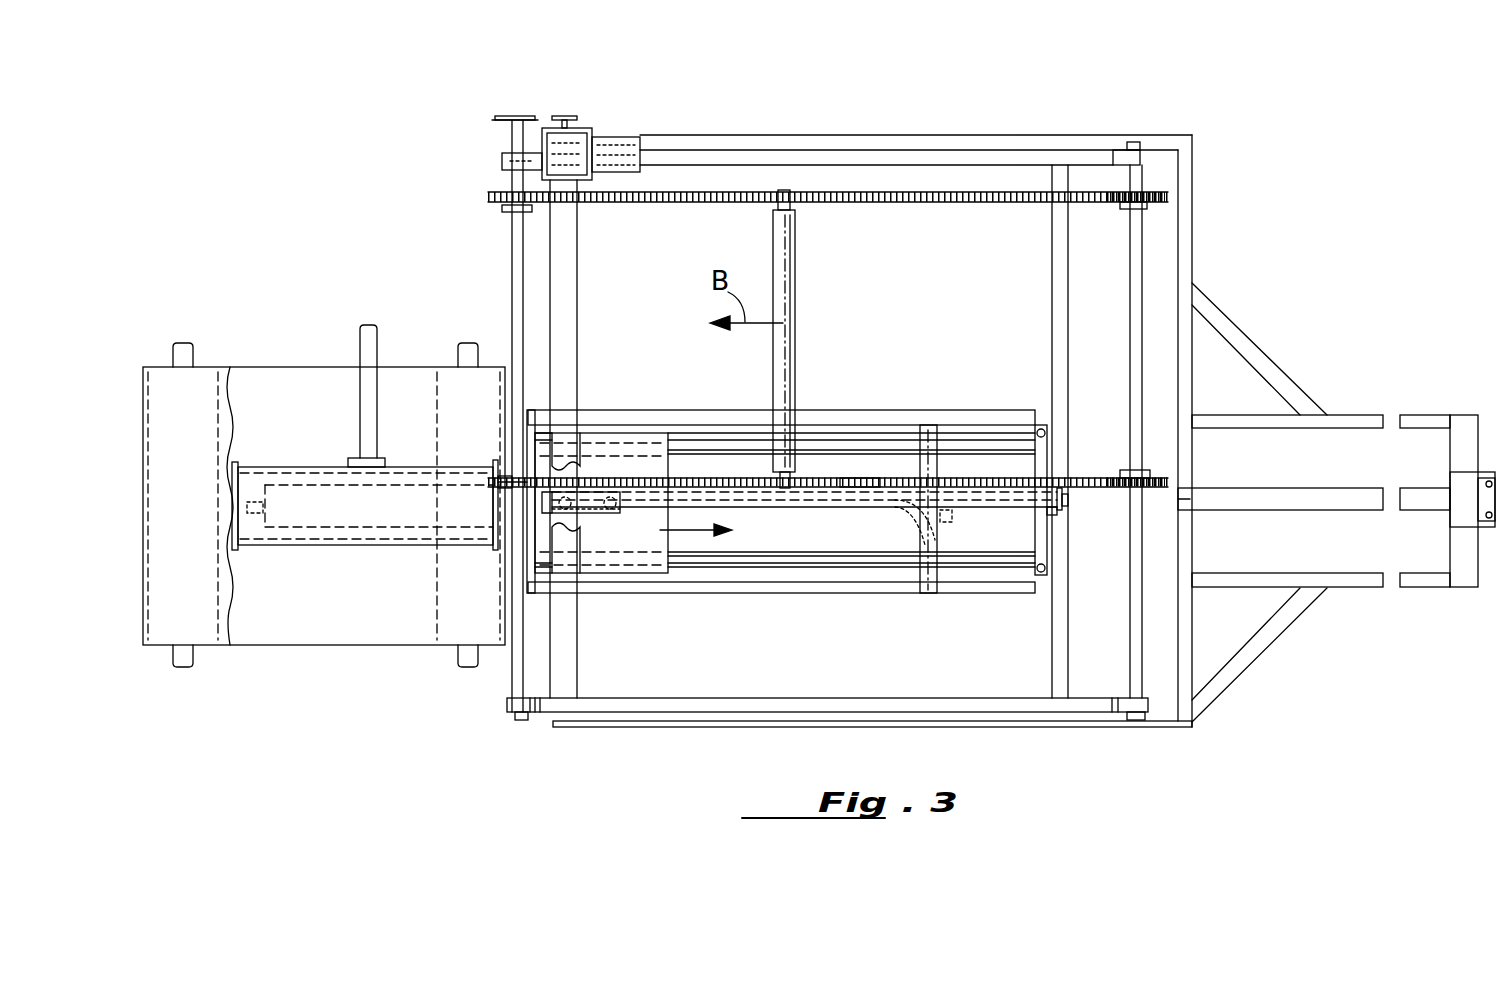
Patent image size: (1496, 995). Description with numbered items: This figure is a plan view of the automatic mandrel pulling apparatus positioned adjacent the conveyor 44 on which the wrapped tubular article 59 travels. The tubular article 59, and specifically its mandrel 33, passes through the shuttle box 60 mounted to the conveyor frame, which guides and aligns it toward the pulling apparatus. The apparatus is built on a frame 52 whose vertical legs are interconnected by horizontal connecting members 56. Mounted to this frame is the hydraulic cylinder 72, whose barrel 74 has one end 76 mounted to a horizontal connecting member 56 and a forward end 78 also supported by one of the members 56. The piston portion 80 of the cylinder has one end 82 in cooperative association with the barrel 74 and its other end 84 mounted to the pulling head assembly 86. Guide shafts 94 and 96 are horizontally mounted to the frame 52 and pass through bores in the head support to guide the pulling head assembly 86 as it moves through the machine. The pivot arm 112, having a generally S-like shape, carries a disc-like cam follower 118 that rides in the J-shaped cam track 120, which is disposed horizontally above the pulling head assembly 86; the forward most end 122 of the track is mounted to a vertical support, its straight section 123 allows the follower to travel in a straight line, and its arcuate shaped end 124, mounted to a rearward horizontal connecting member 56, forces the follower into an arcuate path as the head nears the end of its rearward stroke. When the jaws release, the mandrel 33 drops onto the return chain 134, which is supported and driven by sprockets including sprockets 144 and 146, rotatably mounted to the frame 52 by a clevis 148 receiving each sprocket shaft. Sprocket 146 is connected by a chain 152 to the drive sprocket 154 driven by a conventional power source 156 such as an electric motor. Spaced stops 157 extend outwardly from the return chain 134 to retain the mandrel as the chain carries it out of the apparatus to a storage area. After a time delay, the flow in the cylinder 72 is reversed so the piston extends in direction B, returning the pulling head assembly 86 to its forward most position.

The mandrel 33 is at (790, 294).
The conveyor 44 is at (258, 376).
The frame 52 is at (1240, 266).
The horizontal connecting members 56 is at (1054, 307).
The tubular article 59 is at (354, 527).
The shuttle box 60 is at (293, 467).
The hydraulic cylinder 72 is at (1336, 501).
The barrel 74 is at (1339, 500).
The barrel end 76 is at (1465, 500).
The forward barrel end 78 is at (1056, 514).
The piston portion 80 is at (988, 506).
The piston end 82 is at (1070, 500).
The piston end 84 is at (663, 502).
The pulling head assembly 86 is at (636, 425).
The guide shaft 94 is at (845, 558).
The guide shaft 96 is at (708, 440).
The pivot arm 112 is at (595, 492).
The cam follower 118 is at (597, 511).
The cam track 120 is at (819, 520).
The forward most end 122 is at (560, 512).
The straight section 123 is at (750, 515).
The arcuate shaped end 124 is at (913, 509).
The return chain 134 is at (858, 476).
The sprocket 144 is at (1112, 470).
The sprocket 146 is at (498, 470).
The clevis 148 is at (514, 267).
The chain 152 is at (540, 118).
The drive sprocket 154 is at (565, 116).
The power source 156 is at (617, 135).
The stops 157 is at (874, 203).